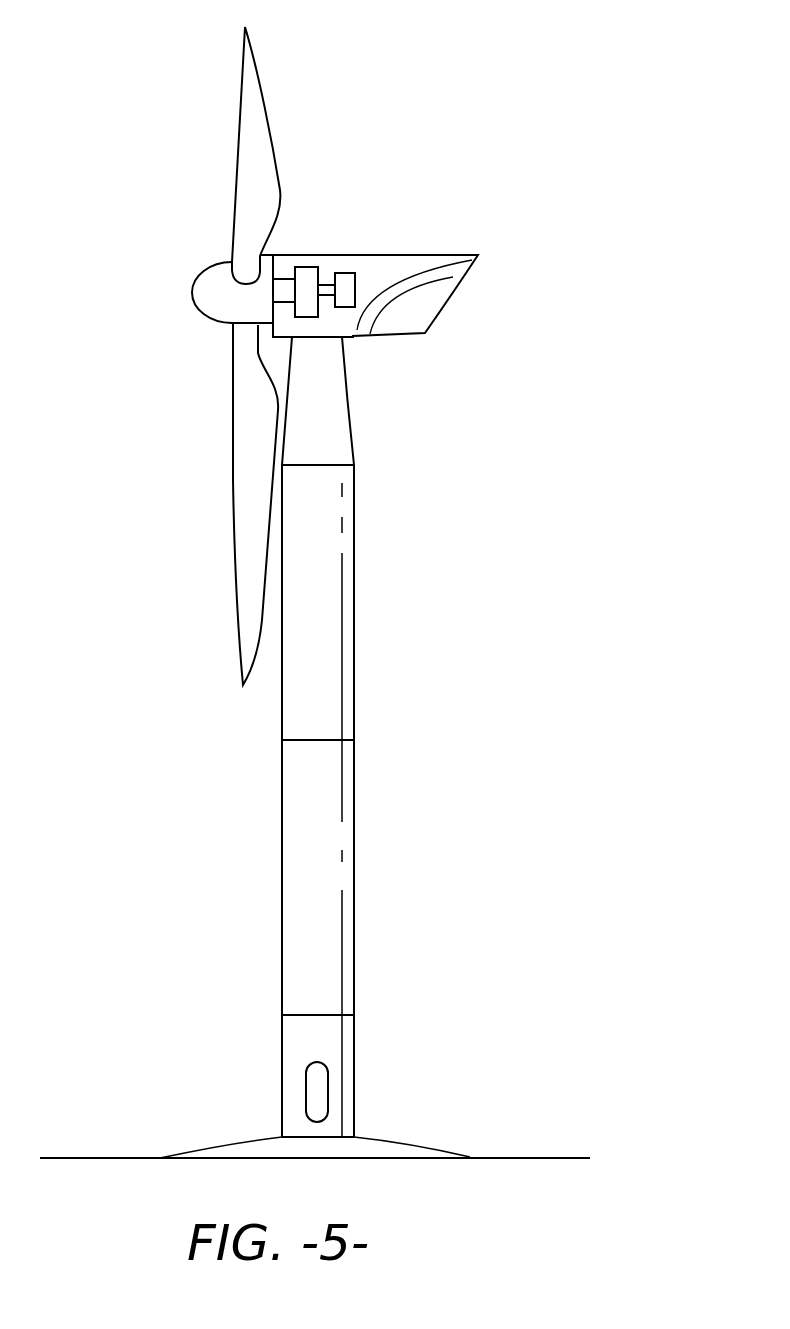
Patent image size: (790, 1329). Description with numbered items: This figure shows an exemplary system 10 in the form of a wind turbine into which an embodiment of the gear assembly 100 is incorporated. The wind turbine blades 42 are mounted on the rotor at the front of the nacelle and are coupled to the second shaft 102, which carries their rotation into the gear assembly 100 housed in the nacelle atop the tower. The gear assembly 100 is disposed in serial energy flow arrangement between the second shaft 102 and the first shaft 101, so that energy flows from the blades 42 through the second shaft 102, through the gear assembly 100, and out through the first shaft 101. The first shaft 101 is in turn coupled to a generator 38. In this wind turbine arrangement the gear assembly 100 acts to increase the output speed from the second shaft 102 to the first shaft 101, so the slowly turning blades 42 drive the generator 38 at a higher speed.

The system 10 is at (128, 177).
The wind turbine blades 42 is at (250, 158).
The second shaft 102 is at (283, 285).
The gear assembly 100 is at (307, 275).
The first shaft 101 is at (324, 300).
The generator 38 is at (344, 278).